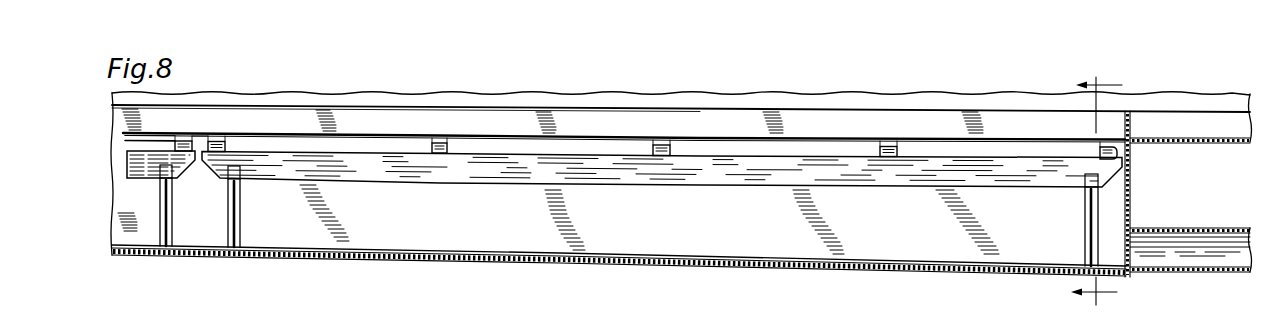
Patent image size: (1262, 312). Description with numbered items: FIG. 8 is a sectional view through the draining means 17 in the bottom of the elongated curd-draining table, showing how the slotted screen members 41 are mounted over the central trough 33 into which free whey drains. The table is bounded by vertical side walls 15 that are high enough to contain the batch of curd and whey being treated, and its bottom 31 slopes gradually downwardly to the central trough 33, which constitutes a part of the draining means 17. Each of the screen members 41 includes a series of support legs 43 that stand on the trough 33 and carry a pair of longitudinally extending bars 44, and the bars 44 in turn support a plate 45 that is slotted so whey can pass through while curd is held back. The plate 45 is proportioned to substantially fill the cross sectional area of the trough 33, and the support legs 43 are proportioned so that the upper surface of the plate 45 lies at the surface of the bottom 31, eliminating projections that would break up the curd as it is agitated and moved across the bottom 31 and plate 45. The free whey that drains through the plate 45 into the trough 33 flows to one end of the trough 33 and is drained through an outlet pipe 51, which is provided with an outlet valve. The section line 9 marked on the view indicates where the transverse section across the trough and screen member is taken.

The section line 9— 9 is at (1096, 186).
The side walls 15 is at (912, 98).
The draining means 17 is at (831, 133).
The bottom 31 is at (1195, 143).
The central trough 33 is at (590, 259).
The slotted screen members 41 is at (244, 129).
The support legs 43 is at (172, 210).
The longitudinally extending bars 44 is at (145, 173).
The plate 45 is at (457, 137).
The outlet pipe 51 is at (1200, 233).